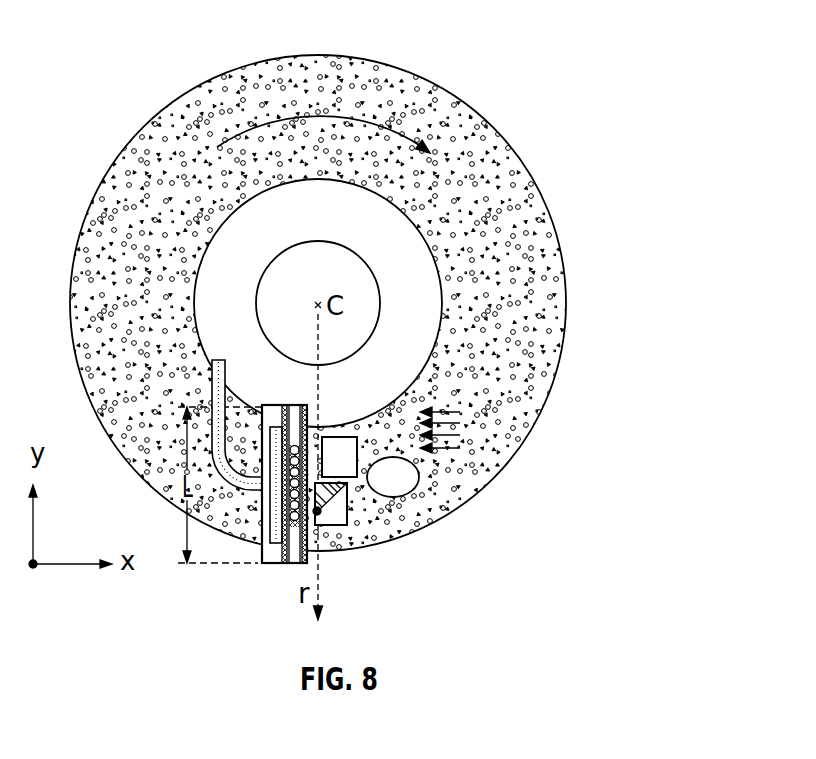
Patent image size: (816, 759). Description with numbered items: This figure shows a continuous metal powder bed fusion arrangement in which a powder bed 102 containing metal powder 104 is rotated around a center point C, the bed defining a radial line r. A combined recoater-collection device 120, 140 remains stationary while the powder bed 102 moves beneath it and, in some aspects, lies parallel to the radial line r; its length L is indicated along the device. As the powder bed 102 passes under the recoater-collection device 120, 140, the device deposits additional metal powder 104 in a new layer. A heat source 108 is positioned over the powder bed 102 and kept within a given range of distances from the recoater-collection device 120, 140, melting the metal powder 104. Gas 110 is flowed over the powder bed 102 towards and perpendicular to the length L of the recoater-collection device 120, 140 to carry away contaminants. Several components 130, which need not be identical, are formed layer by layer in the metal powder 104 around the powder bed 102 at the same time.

The powder bed 102 is at (570, 313).
The metal powder 104 is at (512, 417).
The heat source 108 is at (320, 512).
The gas 110 is at (443, 405).
The recoater-collection device 120 is at (237, 507).
The recoater-collection device 140 is at (250, 557).
The components 130 is at (405, 482).